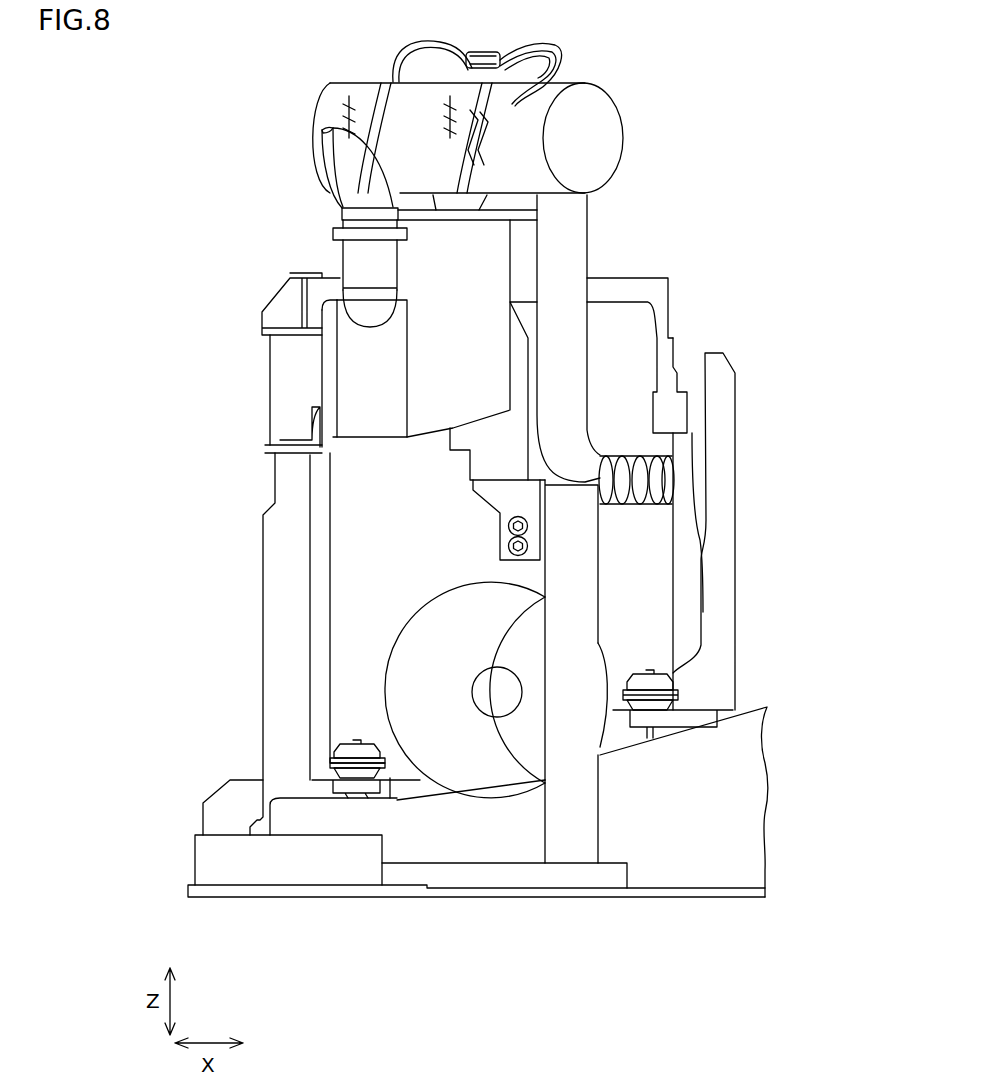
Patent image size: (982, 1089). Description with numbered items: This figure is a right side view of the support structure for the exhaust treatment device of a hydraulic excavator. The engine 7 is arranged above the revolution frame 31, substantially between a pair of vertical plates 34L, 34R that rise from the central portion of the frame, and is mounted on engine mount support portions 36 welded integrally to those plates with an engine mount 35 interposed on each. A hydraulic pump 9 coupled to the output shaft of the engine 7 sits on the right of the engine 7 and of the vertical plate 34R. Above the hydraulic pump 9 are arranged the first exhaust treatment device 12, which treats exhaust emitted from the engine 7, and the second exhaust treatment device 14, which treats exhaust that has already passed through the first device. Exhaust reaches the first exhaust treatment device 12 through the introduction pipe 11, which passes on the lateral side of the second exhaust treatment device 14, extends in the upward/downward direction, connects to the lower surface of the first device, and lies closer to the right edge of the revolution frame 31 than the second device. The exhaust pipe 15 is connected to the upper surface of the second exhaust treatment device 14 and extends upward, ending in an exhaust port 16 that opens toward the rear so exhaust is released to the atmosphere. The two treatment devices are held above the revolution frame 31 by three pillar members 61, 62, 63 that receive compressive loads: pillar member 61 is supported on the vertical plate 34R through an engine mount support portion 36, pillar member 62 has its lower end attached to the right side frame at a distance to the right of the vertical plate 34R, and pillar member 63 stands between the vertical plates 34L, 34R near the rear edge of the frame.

The engine 7 is at (355, 550).
The hydraulic pump 9 is at (413, 680).
The introduction pipe 11 is at (567, 240).
The first exhaust treatment device 12 is at (583, 120).
The second exhaust treatment device 14 is at (625, 325).
The exhaust pipe 15 is at (363, 183).
The exhaust port 16 is at (323, 160).
The revolution frame 31 is at (226, 905).
The vertical plate 34L is at (223, 800).
The vertical plate 34R is at (743, 825).
The engine mount 35 is at (663, 678).
The engine mount support portion 36 is at (663, 718).
The pillar member 61 is at (717, 565).
The pillar member 62 is at (571, 837).
The pillar member 63 is at (280, 723).